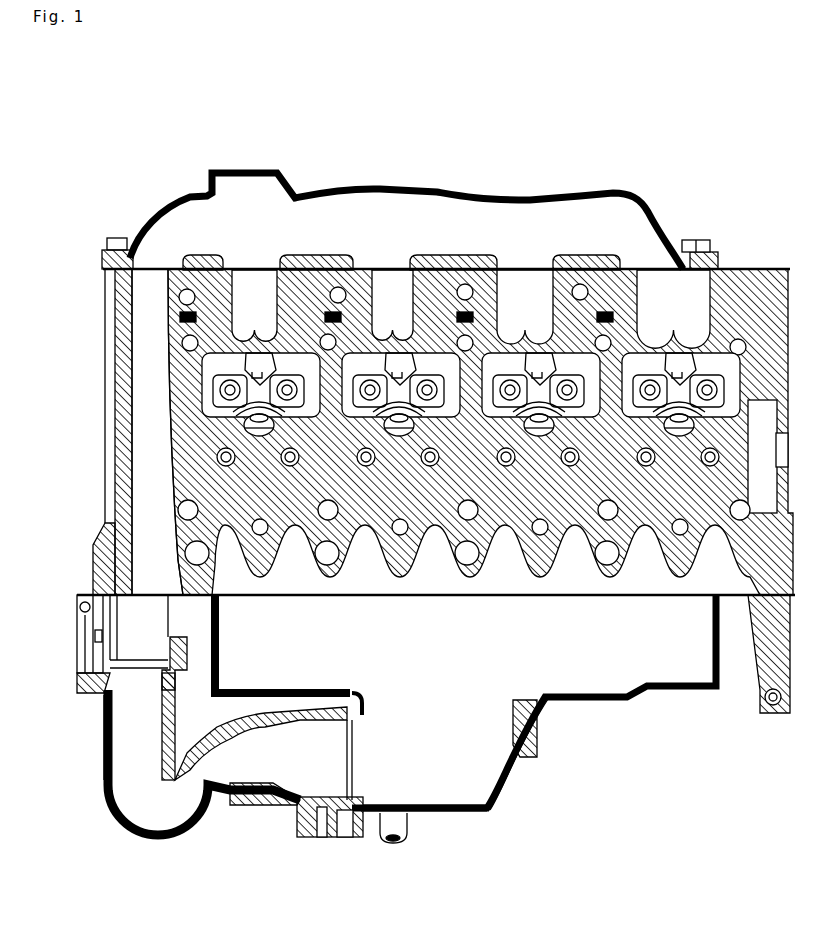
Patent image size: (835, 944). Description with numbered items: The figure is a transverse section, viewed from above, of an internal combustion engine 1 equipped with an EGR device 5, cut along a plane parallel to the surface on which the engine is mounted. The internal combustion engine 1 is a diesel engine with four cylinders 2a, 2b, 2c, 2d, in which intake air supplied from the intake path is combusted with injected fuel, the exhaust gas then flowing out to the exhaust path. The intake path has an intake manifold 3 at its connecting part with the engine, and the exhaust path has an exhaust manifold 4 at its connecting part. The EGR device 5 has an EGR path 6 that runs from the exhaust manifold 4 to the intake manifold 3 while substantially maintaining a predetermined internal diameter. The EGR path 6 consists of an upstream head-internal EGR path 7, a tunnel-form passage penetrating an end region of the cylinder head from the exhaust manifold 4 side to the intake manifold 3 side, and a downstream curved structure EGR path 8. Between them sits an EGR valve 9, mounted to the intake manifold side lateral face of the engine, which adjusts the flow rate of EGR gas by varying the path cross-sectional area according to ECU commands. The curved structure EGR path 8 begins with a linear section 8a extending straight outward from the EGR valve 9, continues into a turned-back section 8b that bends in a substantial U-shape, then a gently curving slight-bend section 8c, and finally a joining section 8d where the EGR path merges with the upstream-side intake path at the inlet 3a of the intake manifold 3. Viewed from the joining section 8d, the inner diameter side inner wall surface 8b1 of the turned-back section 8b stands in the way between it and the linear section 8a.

The internal combustion engine 1 is at (640, 168).
The cylinder 2a is at (278, 355).
The cylinder 2b is at (420, 355).
The cylinder 2c is at (563, 355).
The cylinder 2d is at (712, 358).
The intake manifold 3 is at (600, 697).
The inlet of the intake manifold 3a is at (447, 772).
The exhaust manifold 4 is at (160, 203).
The EGR device 5 is at (57, 418).
The EGR path 6 is at (116, 476).
The head-internal EGR path 7 is at (134, 365).
The curved structure EGR path 8 is at (140, 822).
The linear section 8a is at (102, 740).
The turned-back section 8b is at (168, 832).
The inner diameter side inner wall surface 8b1 is at (165, 772).
The slight-bend section 8c is at (243, 798).
The joining section 8d is at (330, 775).
The EGR valve 9 is at (77, 627).